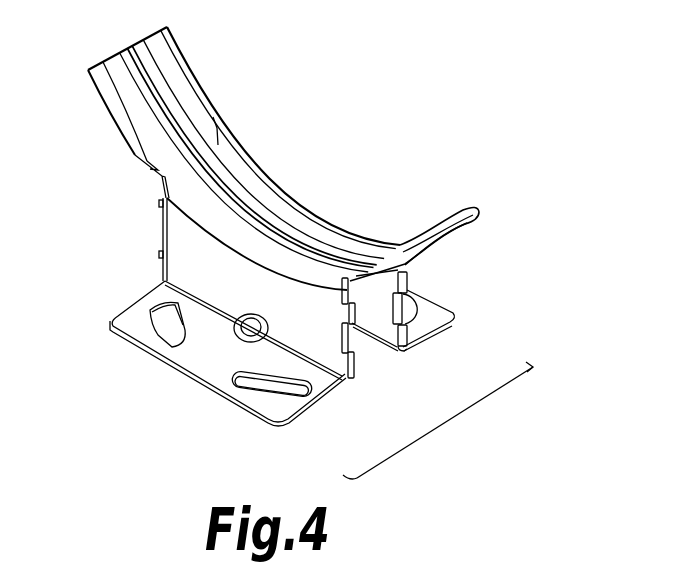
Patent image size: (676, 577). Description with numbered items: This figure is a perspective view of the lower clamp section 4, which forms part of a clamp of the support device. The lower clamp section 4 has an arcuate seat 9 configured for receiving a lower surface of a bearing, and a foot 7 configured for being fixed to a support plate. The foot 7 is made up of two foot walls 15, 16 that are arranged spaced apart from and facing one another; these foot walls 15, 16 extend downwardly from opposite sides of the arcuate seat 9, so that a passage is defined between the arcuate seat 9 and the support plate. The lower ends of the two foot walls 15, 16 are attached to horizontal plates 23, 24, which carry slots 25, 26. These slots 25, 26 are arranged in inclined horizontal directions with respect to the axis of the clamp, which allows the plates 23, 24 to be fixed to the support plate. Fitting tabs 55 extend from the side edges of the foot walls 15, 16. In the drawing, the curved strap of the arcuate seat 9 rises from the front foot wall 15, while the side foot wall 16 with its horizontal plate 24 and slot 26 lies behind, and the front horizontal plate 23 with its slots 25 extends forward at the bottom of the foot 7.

The lower clamp section 4 is at (309, 253).
The arcuate seat 9 is at (250, 203).
The fitting tabs 55 is at (160, 208).
The foot wall 15 is at (333, 328).
The foot wall 16 is at (370, 323).
The horizontal plate 23 is at (297, 398).
The horizontal plate 24 is at (453, 317).
The slots 25 is at (165, 332).
The slots 26 is at (415, 298).
The foot 7 is at (443, 425).